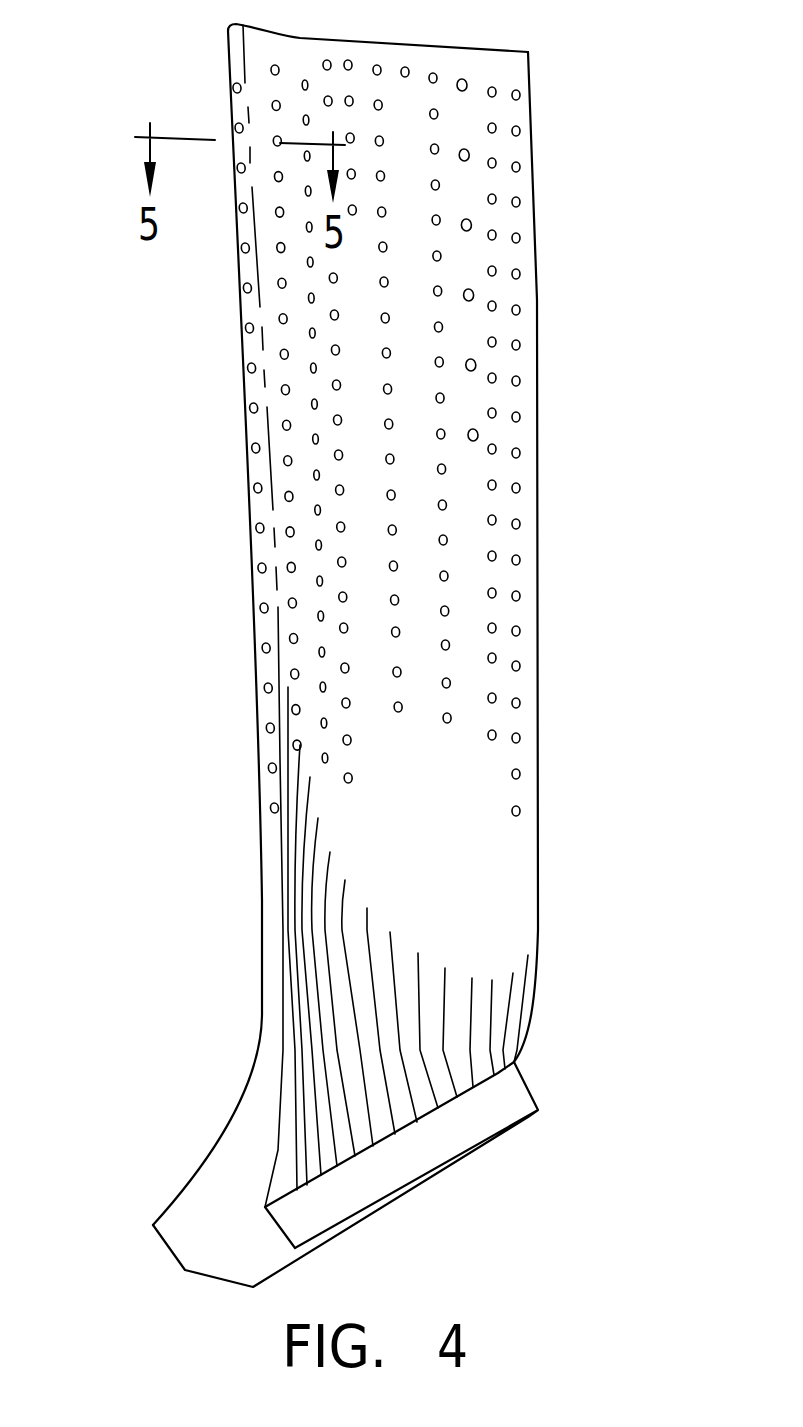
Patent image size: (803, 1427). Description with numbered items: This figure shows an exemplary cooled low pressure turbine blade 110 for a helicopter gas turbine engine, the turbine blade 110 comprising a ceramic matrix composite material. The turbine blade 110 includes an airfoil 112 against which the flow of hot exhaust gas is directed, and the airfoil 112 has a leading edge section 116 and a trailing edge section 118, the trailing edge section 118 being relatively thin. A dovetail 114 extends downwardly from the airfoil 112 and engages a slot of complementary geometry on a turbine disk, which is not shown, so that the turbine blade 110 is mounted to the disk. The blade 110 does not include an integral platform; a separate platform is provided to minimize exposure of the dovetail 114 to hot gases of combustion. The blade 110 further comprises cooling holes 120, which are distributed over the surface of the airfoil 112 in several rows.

The turbine blade 110 is at (182, 521).
The airfoil 112 is at (537, 342).
The dovetail 114 is at (528, 1090).
The leading edge section 116 is at (537, 658).
The trailing edge section 118 is at (256, 712).
The cooling holes 120 is at (332, 348).